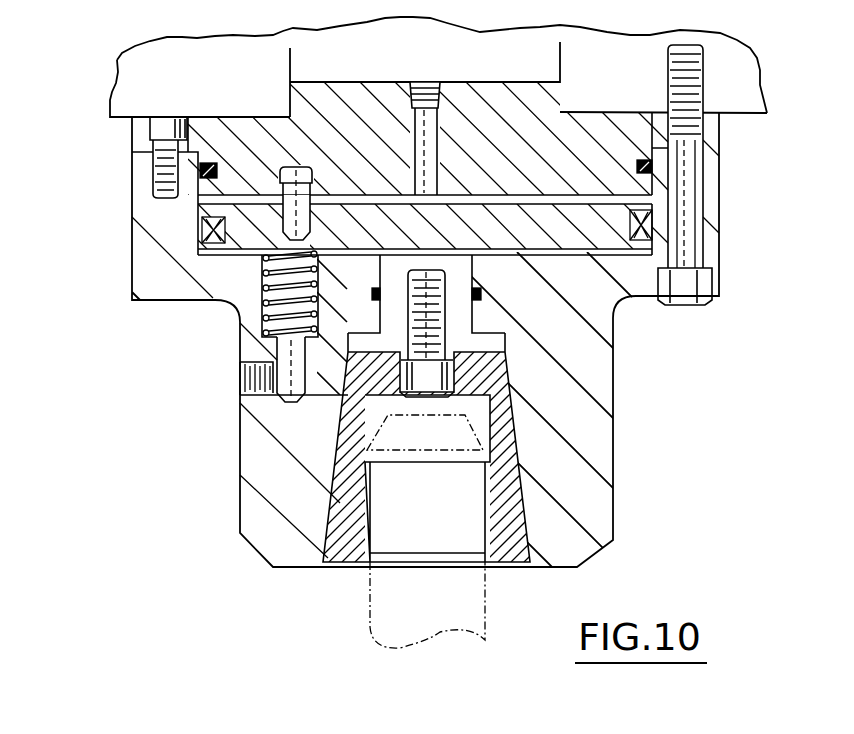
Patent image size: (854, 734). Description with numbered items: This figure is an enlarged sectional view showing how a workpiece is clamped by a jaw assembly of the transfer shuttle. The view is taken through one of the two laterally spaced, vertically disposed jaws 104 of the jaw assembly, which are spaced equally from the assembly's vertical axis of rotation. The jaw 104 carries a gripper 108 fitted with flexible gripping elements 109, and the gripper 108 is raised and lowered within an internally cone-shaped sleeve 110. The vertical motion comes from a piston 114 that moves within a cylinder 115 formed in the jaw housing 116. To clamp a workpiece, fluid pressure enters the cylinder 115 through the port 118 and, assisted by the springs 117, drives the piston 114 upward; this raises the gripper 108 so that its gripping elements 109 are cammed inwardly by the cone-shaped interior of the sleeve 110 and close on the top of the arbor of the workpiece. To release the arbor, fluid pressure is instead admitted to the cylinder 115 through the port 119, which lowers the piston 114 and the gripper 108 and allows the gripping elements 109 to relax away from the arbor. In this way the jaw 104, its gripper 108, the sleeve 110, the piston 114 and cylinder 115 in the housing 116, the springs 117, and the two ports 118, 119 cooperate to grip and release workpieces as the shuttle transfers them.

The jaw 104 is at (765, 95).
The gripper 108 is at (345, 395).
The flexible gripping elements 109 is at (340, 515).
The internally cone-shaped sleeve 110 is at (597, 494).
The piston 114 is at (240, 242).
The cylinder 115 is at (553, 195).
The jaw housing 116 is at (136, 253).
The springs 117 is at (262, 317).
The port 118 is at (285, 352).
The port 119 is at (437, 117).